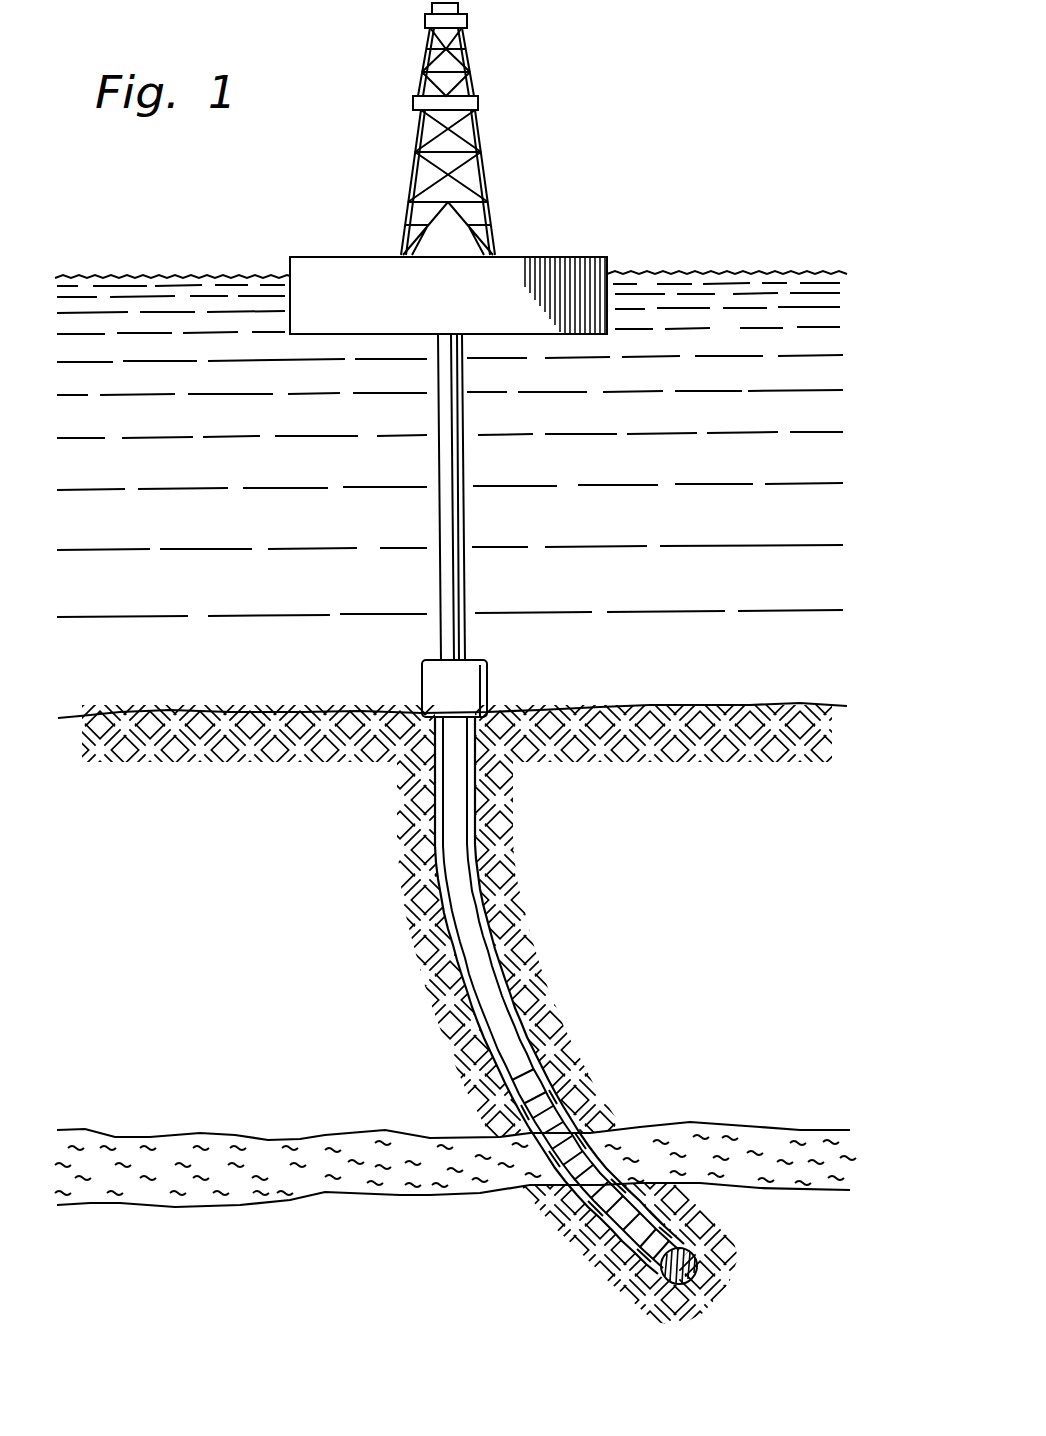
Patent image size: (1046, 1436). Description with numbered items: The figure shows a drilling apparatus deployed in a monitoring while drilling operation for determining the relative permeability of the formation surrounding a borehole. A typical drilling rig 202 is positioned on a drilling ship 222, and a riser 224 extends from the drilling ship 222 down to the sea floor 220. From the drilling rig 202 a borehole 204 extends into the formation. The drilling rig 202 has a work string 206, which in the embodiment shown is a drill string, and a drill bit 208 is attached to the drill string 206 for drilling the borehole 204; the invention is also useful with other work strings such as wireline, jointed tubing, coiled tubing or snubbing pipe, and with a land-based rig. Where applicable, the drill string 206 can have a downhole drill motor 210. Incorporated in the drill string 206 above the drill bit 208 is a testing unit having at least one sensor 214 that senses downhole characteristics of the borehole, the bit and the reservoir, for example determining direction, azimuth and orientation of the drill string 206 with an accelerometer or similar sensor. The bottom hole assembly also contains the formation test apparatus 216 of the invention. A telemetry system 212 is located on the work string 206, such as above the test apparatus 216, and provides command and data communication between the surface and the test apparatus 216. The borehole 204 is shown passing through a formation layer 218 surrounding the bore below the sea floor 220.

The drilling rig 202 is at (483, 168).
The borehole 204 is at (516, 1005).
The work string 206 is at (462, 880).
The drill bit 208 is at (668, 1303).
The downhole drill motor 210 is at (636, 1243).
The telemetry system 212 is at (552, 1084).
The sensor 214 is at (594, 1243).
The formation test apparatus 216 is at (548, 1194).
The formation layer 218 is at (173, 1148).
The sea floor 220 is at (675, 704).
The drilling ship 222 is at (330, 256).
The riser 224 is at (438, 578).